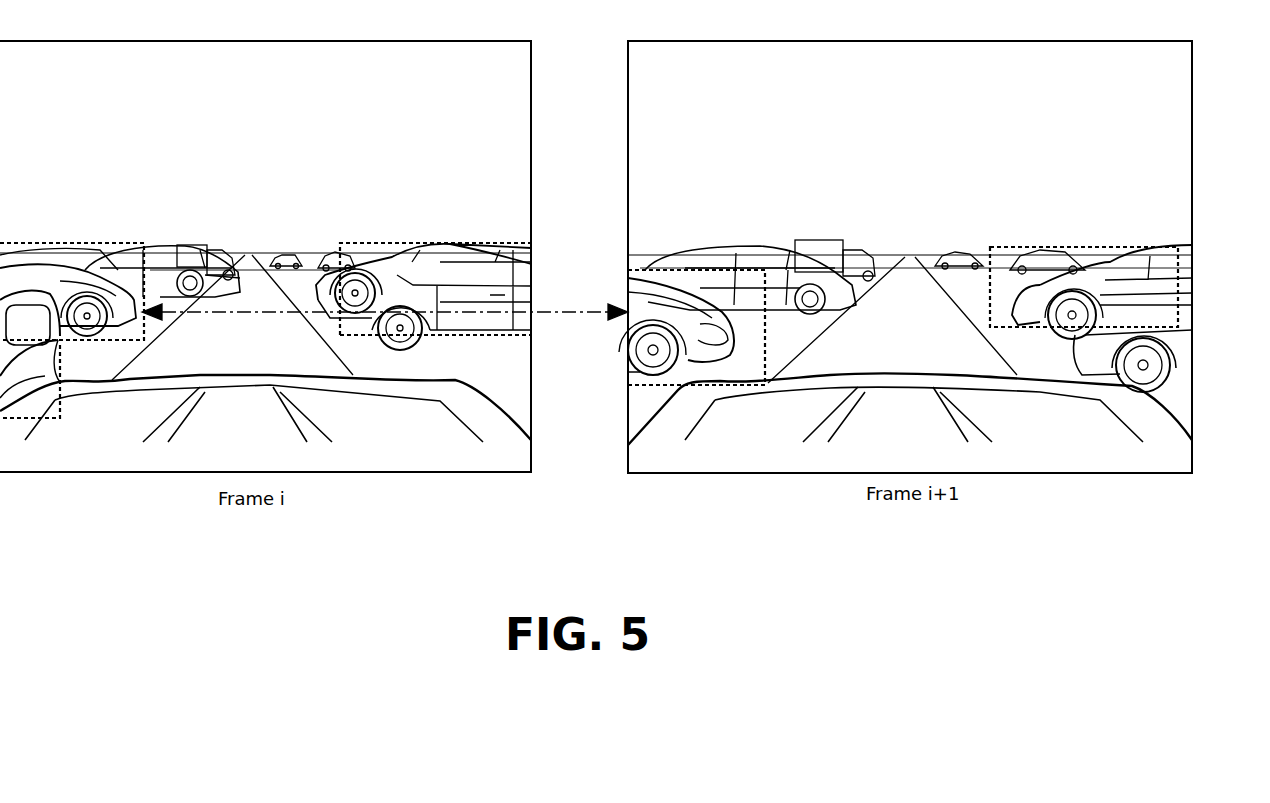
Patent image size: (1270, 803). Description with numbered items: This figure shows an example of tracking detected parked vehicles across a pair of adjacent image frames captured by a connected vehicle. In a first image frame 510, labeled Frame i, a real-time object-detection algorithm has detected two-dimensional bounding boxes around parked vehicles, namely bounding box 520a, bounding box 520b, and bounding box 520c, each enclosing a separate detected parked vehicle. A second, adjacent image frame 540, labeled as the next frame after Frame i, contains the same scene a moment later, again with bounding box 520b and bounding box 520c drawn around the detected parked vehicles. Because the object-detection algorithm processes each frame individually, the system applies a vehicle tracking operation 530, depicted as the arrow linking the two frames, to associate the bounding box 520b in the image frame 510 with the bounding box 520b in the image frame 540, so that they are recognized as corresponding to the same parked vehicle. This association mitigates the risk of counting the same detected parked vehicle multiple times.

The image frame 510 is at (531, 398).
The bounding box 520a is at (3, 425).
The bounding box 520b is at (80, 345).
The bounding box 520c is at (455, 340).
The vehicle tracking operation 530 is at (568, 316).
The image frame 540 is at (1194, 418).